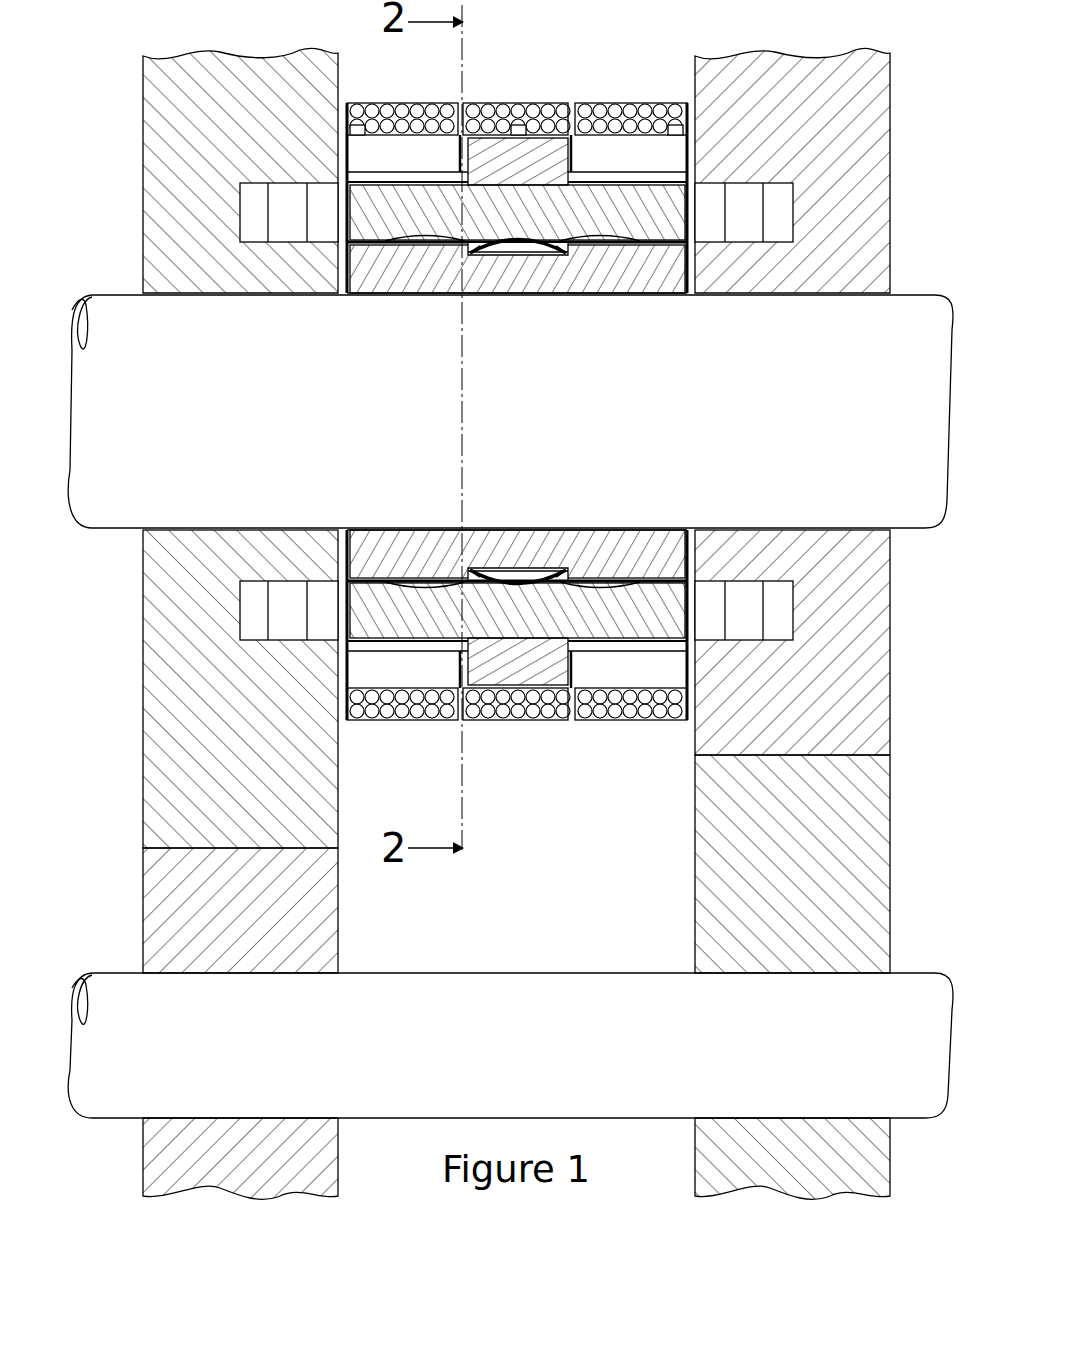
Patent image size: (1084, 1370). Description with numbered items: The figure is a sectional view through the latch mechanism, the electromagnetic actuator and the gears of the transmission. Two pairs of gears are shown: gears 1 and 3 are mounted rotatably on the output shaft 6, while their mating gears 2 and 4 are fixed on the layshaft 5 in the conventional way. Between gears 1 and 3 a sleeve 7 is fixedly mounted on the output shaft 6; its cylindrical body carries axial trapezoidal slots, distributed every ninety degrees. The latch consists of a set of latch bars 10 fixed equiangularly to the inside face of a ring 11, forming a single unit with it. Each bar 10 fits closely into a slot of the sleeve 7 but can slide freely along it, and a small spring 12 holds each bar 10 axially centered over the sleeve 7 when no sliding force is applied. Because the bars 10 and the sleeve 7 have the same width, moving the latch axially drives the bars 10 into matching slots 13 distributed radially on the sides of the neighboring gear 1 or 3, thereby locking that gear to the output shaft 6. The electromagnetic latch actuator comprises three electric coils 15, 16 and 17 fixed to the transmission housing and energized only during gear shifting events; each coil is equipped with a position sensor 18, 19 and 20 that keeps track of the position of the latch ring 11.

The gear 1 is at (147, 172).
The gear 2 is at (160, 877).
The gear 3 is at (880, 183).
The gear 4 is at (877, 876).
The layshaft 5 is at (103, 1120).
The output shaft 6 is at (104, 530).
The sleeve 7 is at (628, 270).
The latch bar 10 is at (372, 230).
The ring 11 is at (490, 677).
The spring 12 is at (558, 258).
The slot 13 is at (288, 225).
The electric coil 15 is at (397, 720).
The electric coil 16 is at (525, 720).
The electric coil 17 is at (623, 720).
The position sensor 18 is at (362, 102).
The position sensor 19 is at (505, 102).
The position sensor 20 is at (662, 102).